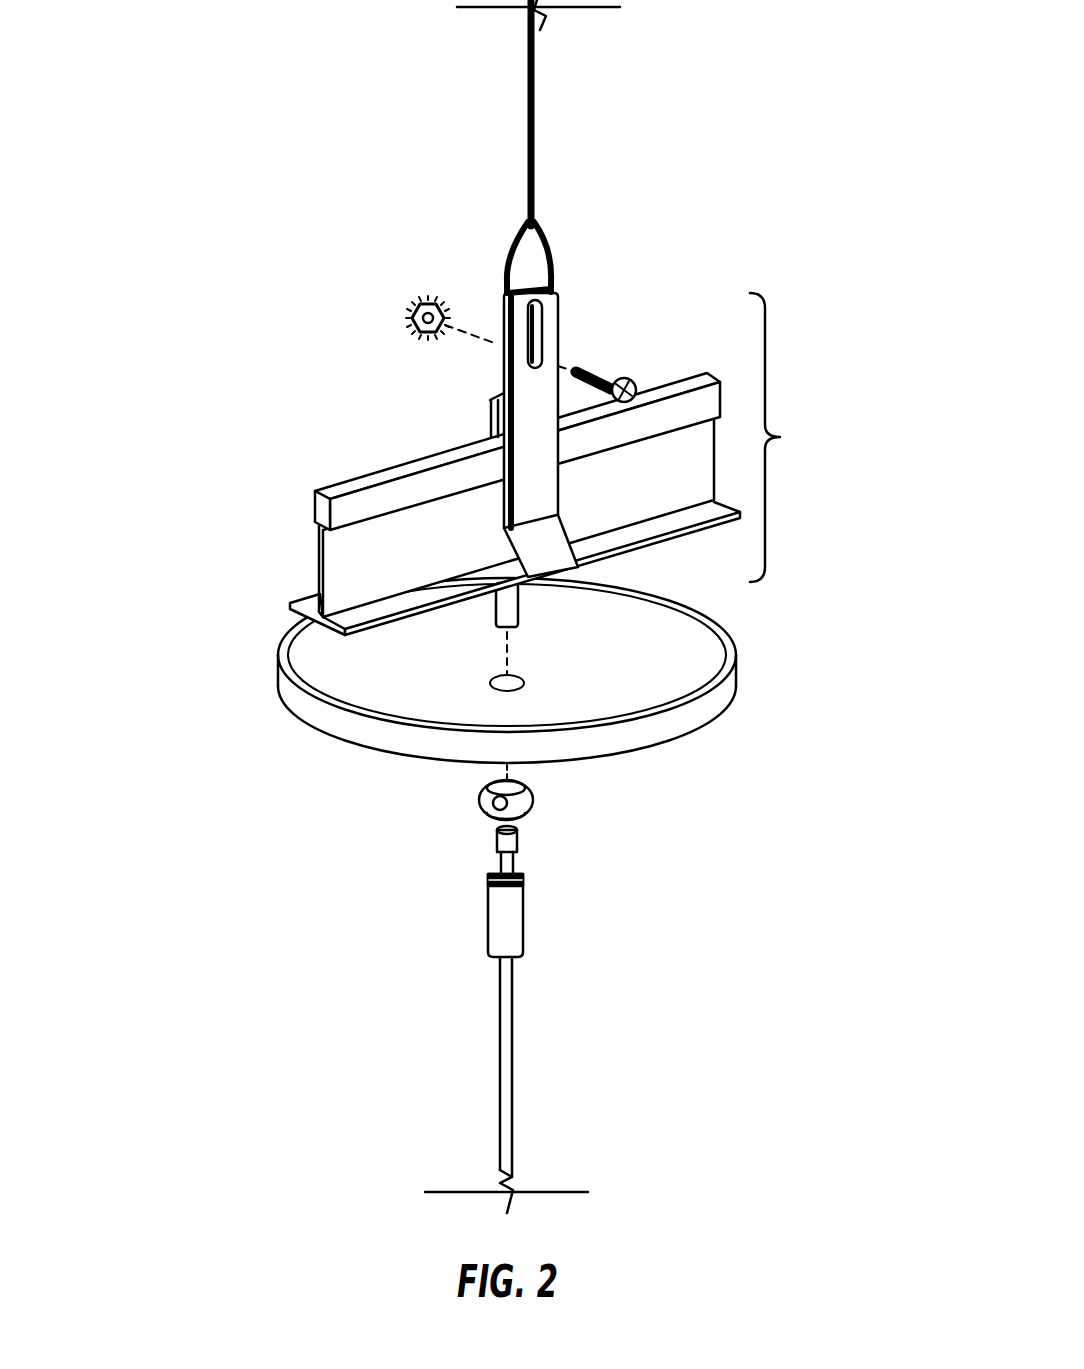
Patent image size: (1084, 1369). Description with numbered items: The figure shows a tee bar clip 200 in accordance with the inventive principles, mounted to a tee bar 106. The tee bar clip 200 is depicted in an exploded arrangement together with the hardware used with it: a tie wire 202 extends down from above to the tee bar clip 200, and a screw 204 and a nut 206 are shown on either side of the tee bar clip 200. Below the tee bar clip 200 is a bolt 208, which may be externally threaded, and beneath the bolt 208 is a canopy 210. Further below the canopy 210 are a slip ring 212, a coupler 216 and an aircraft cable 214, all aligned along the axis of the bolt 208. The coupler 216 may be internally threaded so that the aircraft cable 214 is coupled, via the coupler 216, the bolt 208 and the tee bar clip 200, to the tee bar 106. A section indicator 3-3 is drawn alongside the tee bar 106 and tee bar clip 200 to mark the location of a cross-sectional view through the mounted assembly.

The tee bar 106 is at (304, 567).
The tee bar clip 200 is at (482, 417).
The tie wire 202 is at (526, 102).
The screw 204 is at (597, 368).
The nut 206 is at (412, 313).
The bolt 208 is at (518, 620).
The canopy 210 is at (725, 698).
The slip ring 212 is at (523, 800).
The aircraft cable 214 is at (515, 853).
The coupler 216 is at (525, 926).
The section line 3-3 is at (793, 437).